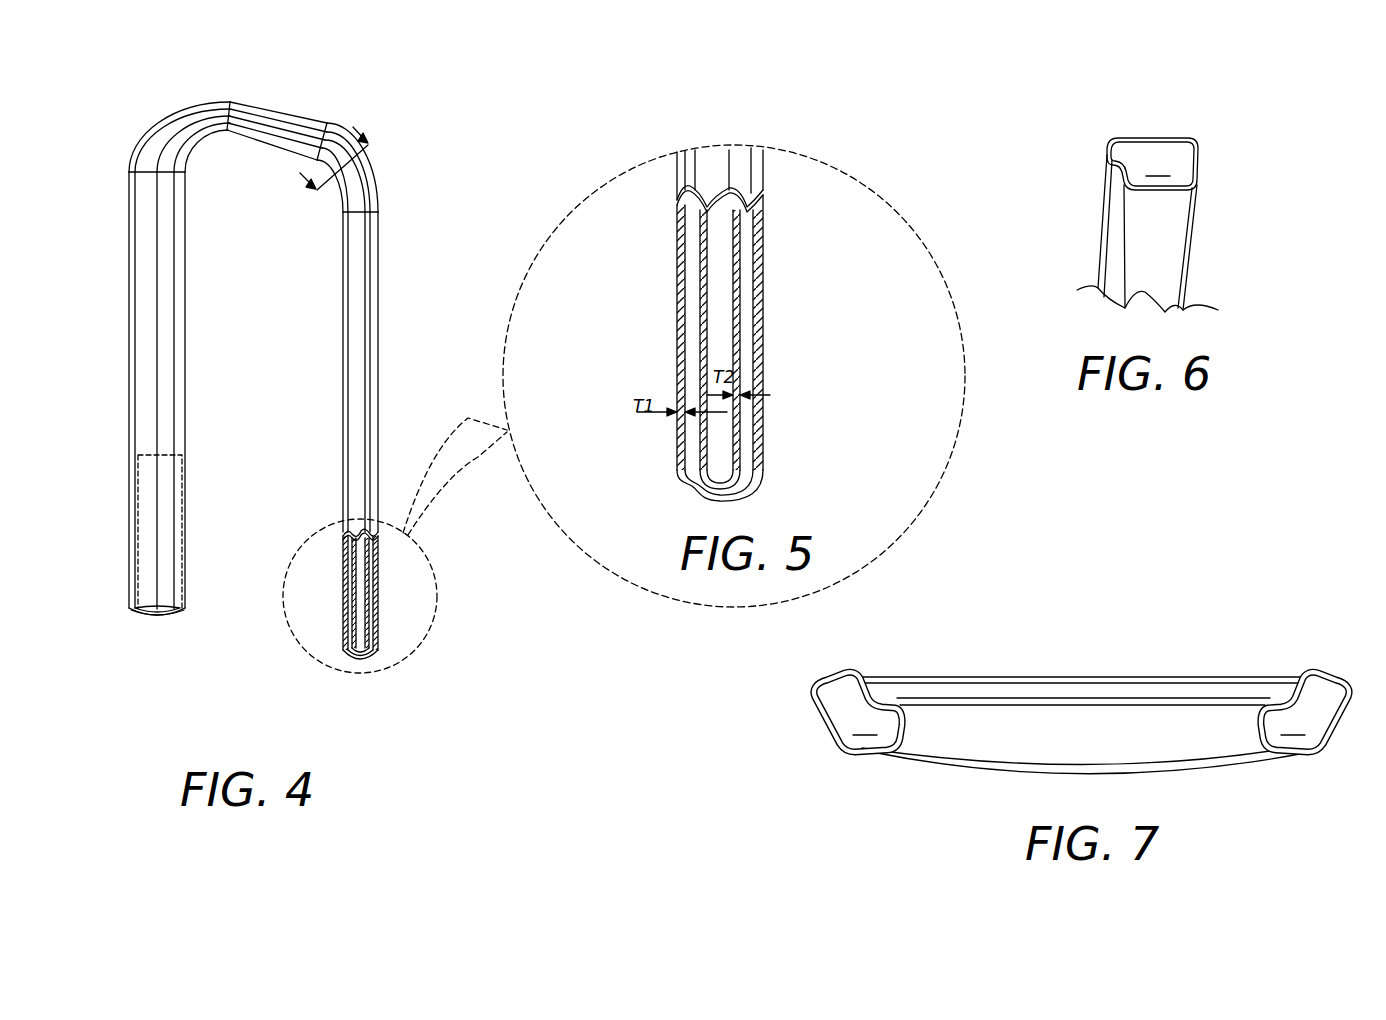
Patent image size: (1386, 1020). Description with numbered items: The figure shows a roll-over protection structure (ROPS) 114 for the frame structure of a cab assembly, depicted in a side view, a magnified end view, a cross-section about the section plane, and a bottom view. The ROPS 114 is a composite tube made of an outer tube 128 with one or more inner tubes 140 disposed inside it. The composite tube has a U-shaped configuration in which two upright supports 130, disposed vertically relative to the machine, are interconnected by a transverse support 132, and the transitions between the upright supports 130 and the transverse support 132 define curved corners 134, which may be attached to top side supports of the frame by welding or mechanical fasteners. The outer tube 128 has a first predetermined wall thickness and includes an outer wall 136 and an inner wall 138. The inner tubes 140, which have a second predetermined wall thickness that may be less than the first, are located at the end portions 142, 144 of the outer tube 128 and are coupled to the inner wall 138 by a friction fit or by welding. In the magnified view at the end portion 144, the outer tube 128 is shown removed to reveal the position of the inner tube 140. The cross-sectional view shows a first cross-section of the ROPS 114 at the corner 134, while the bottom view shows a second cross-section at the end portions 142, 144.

In FIG. 4, the roll-over protection structure 114 is at (257, 327).
In FIG. 4, the outer tube 128 is at (380, 598).
In FIG. 5, the outer tube 128 is at (765, 283).
In FIG. 7, the outer tube 128 is at (828, 722).
In FIG. 4, the upright supports 130 is at (185, 342).
In FIG. 4, the transverse support 132 is at (261, 108).
In FIG. 7, the transverse support 132 is at (1097, 677).
In FIG. 4, the curved corners 134 is at (150, 129).
In FIG. 6, the curved corners 134 is at (1193, 220).
In FIG. 5, the outer wall 136 is at (677, 360).
In FIG. 5, the inner wall 138 is at (693, 312).
In FIG. 4, the inner tube 140 is at (137, 558).
In FIG. 5, the inner tube 140 is at (703, 445).
In FIG. 7, the inner tube 140 is at (862, 746).
In FIG. 4, the end portion 142 is at (185, 597).
In FIG. 7, the end portion 142 is at (826, 680).
In FIG. 4, the end portion 144 is at (378, 648).
In FIG. 5, the end portion 144 is at (763, 458).
In FIG. 7, the end portion 144 is at (1333, 678).